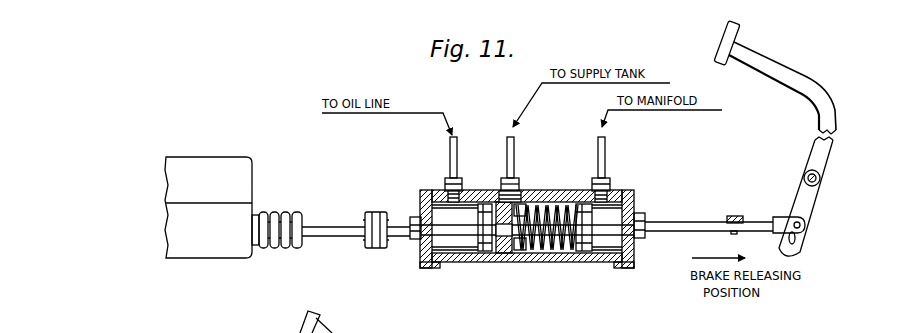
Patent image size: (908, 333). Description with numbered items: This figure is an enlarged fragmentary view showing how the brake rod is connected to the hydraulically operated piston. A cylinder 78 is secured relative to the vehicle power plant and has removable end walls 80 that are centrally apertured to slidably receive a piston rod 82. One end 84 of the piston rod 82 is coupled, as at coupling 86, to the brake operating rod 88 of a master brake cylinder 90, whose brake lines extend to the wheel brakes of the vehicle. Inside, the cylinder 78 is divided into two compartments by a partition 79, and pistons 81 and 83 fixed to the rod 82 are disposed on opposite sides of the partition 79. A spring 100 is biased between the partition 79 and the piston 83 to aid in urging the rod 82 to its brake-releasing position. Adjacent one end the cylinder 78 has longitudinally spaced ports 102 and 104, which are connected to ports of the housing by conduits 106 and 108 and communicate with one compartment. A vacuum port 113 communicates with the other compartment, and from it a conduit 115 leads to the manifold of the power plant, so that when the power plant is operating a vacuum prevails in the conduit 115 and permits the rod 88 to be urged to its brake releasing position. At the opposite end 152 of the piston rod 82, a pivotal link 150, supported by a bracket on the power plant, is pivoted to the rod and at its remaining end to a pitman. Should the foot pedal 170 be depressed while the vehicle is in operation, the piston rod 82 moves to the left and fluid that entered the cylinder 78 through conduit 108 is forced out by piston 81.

The cylinder 78 is at (505, 253).
The partition 79 is at (527, 245).
The removable end walls 80 is at (636, 207).
The piston 81 is at (483, 243).
The piston rod 82 is at (657, 232).
The piston 83 is at (590, 243).
The end of piston rod 84 is at (398, 236).
The coupling 86 is at (380, 212).
The brake operating rod 88 is at (335, 230).
The master brake cylinder 90 is at (240, 180).
The spring 100 is at (542, 243).
The port 102 is at (519, 195).
The port 104 is at (443, 192).
The conduit 106 is at (514, 150).
The conduit 108 is at (450, 155).
The vacuum port 113 is at (612, 195).
The conduit 115 is at (605, 155).
The pivotal link 150 is at (726, 217).
The end of piston rod 152 is at (758, 219).
The foot pedal 170 is at (798, 80).